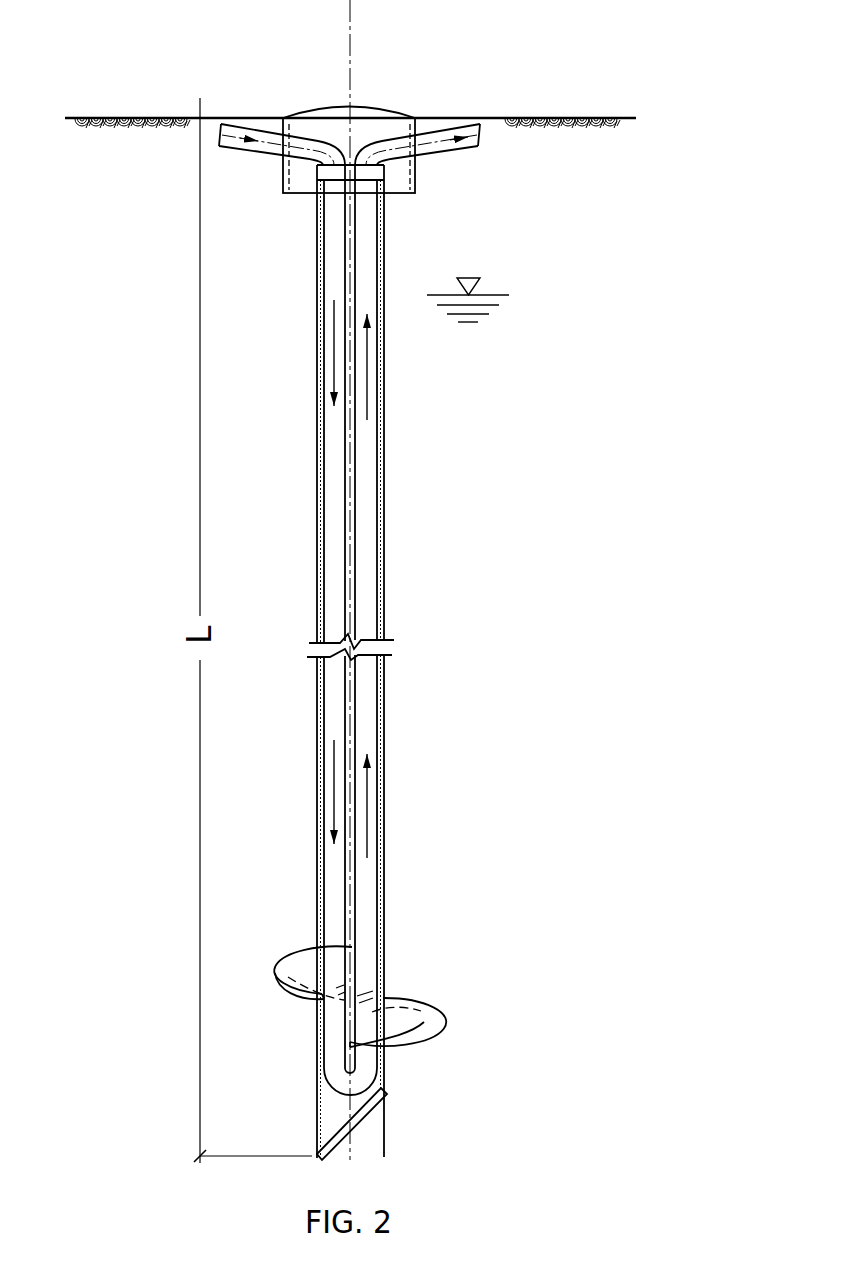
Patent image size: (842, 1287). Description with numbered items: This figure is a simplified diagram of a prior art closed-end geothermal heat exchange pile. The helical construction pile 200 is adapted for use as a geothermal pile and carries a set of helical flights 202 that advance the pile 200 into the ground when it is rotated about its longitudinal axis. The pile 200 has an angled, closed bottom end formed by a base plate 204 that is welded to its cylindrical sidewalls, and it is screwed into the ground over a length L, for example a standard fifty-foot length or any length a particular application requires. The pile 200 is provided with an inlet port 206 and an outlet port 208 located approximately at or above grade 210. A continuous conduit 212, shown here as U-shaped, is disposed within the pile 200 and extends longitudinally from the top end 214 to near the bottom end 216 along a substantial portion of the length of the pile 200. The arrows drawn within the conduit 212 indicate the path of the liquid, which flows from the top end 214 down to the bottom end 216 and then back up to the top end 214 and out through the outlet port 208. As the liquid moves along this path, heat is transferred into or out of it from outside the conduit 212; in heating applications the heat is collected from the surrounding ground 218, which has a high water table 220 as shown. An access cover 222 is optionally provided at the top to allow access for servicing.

The helical construction pile 200 is at (386, 508).
The helical flights 202 is at (430, 1018).
The base plate 204 is at (371, 1112).
The inlet port 206 is at (257, 152).
The outlet port 208 is at (458, 152).
The grade 210 is at (518, 112).
The continuous conduit 212 is at (368, 546).
The top end 214 is at (270, 210).
The bottom end 216 is at (277, 1036).
The surrounding ground 218 is at (427, 421).
The water table 220 is at (489, 291).
The access cover 222 is at (335, 107).